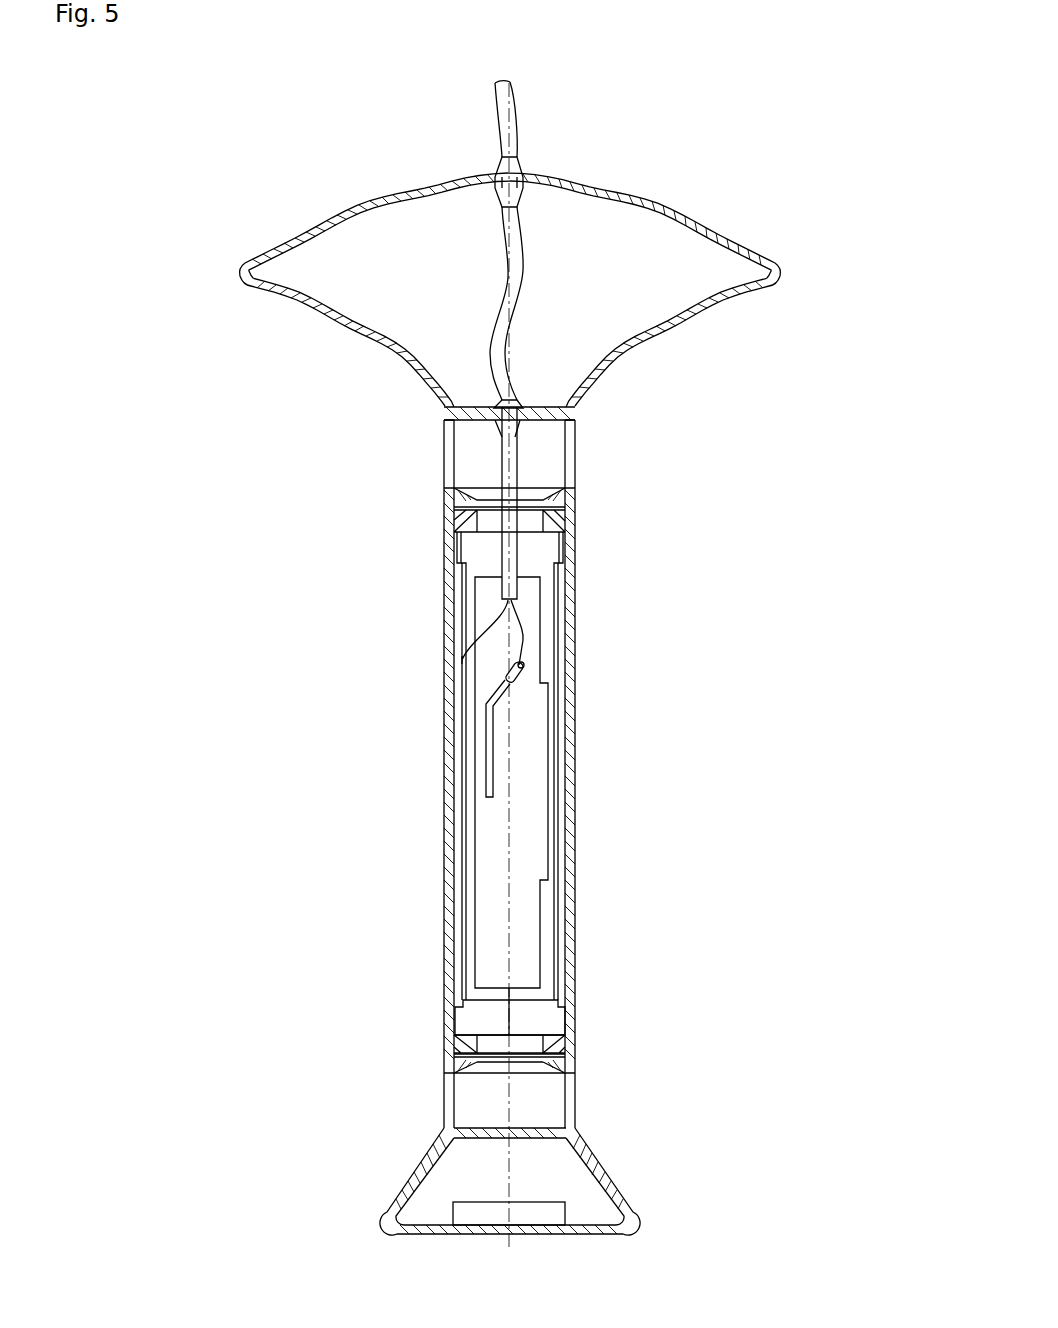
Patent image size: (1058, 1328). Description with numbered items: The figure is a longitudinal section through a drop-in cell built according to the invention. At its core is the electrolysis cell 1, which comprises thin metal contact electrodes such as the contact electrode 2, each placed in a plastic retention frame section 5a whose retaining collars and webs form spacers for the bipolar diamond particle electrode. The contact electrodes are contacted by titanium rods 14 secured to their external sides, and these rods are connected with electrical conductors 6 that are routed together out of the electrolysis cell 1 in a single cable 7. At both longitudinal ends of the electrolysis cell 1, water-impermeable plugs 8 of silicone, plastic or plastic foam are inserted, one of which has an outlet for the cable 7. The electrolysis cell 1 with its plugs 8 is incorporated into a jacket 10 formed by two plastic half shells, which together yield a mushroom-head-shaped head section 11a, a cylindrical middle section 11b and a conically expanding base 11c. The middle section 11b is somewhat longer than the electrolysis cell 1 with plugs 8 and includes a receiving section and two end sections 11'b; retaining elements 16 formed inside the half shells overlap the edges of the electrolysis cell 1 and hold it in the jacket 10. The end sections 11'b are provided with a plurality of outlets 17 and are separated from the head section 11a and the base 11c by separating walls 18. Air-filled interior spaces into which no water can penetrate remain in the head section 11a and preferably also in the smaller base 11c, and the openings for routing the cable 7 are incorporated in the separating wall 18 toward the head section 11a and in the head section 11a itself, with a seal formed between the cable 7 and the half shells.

The electrolysis cell 1 is at (563, 776).
The contact electrode 2 is at (527, 843).
The retention frame section 5a is at (533, 1012).
The electrical conductor 6 is at (523, 640).
The cable 7 is at (575, 188).
The plug 8 is at (472, 524).
The jacket 10 is at (445, 908).
The head section 11a is at (638, 344).
The middle section 11b is at (573, 713).
The end section 11'b is at (678, 536).
The base 11c is at (603, 1168).
The titanium rod 14 is at (488, 774).
The retaining element 16 is at (455, 500).
The outlet 17 is at (575, 467).
The separating wall 18 is at (538, 410).